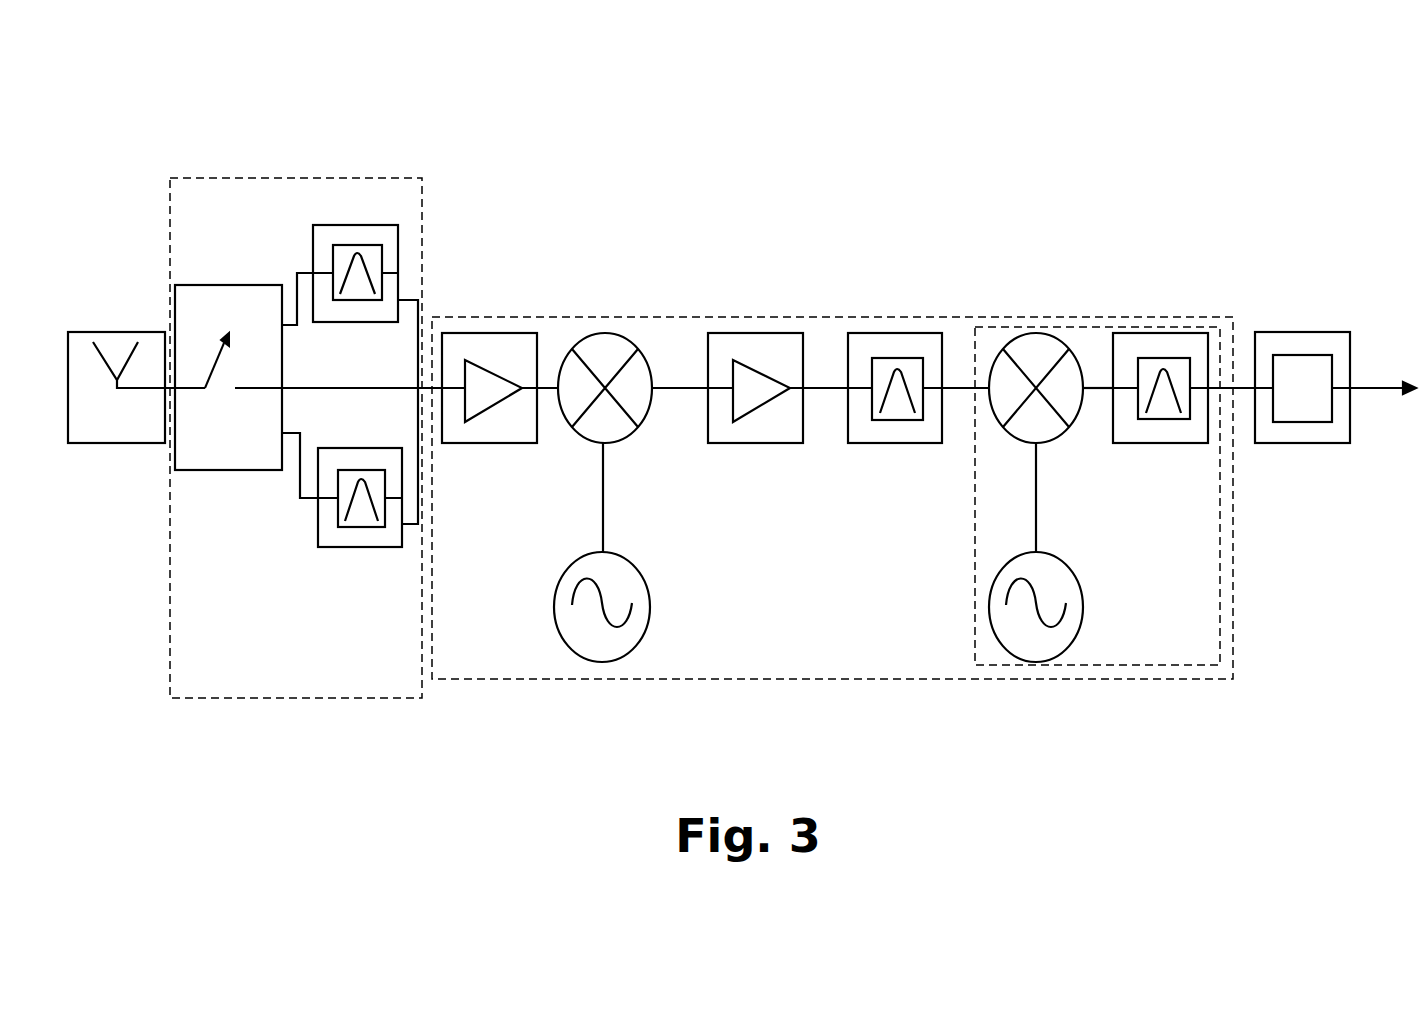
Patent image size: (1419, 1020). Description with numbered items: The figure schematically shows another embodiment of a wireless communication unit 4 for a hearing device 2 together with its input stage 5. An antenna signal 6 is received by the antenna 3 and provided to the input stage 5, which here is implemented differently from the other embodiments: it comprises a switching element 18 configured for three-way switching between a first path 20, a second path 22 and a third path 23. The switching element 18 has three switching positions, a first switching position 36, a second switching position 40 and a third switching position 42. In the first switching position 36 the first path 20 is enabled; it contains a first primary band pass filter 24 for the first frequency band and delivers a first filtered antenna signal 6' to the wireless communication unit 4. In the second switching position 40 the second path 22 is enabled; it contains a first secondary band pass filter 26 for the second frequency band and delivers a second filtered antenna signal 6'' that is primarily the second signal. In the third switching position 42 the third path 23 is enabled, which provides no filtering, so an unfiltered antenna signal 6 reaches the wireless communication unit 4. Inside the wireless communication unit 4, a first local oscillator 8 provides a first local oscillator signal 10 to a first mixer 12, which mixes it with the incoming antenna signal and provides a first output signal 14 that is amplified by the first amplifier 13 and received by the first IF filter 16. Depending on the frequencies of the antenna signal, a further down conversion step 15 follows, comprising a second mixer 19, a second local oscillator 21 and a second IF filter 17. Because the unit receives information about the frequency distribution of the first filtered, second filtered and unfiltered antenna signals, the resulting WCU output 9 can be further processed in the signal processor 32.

The hearing device 2 is at (118, 140).
The antenna 3 is at (82, 332).
The wireless communication unit 4 is at (1247, 316).
The input stage 5 is at (252, 178).
The antenna signal 6 is at (275, 318).
The first filtered antenna signal 6' is at (427, 308).
The second filtered antenna signal 6'' is at (401, 523).
The first local oscillator 8 is at (585, 660).
The WCU output 9 is at (1240, 392).
The first local oscillator signal 10 is at (603, 502).
The first mixer 12 is at (605, 332).
The first amplifier 13 is at (752, 332).
The first output signal 14 is at (827, 383).
The down conversion step 15 is at (1078, 323).
The first IF filter 16 is at (897, 333).
The second IF filter 17 is at (1172, 343).
The switching element 18 is at (182, 473).
The second mixer 19 is at (1010, 343).
The first path 20 is at (297, 287).
The second local oscillator 21 is at (1078, 582).
The second path 22 is at (297, 473).
The third path 23 is at (362, 363).
The first primary band pass filter 24 is at (350, 223).
The first secondary band pass filter 26 is at (345, 548).
The signal processor 32 is at (1328, 443).
The first switching position 36 is at (235, 327).
The second switching position 40 is at (232, 470).
The third switching position 42 is at (233, 382).